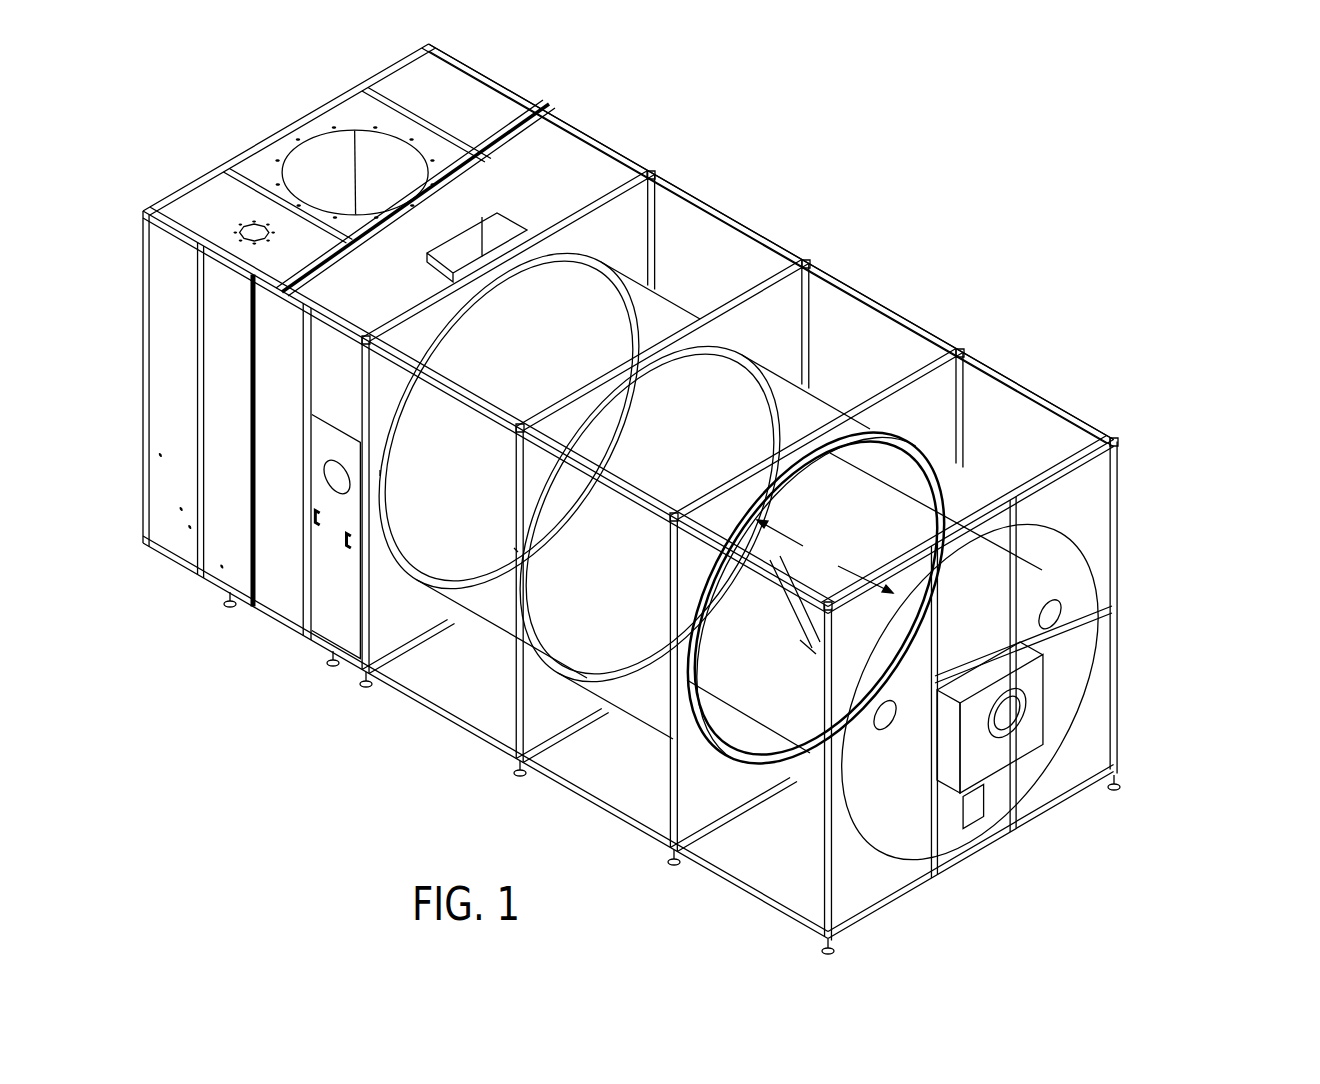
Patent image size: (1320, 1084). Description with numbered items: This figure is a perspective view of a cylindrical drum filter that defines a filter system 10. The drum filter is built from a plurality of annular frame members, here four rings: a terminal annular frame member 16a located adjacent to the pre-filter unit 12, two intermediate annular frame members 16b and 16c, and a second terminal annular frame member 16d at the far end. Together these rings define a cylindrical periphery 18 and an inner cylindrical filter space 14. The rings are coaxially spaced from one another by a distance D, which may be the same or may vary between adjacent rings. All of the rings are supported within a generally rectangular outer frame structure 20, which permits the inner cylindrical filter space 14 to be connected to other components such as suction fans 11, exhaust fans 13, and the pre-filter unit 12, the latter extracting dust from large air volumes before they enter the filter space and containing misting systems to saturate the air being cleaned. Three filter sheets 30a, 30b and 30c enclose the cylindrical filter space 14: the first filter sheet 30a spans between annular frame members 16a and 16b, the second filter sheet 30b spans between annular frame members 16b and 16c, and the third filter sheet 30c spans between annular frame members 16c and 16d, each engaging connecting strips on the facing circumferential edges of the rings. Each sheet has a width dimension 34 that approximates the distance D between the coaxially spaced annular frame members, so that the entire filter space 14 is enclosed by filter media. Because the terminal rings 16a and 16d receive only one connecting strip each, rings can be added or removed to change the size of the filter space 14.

The filter system 10 is at (748, 166).
The suction fans 11 is at (1066, 568).
The pre-filter unit 12 is at (537, 94).
The exhaust fans 13 is at (1040, 715).
The inner cylindrical filter space 14 is at (850, 520).
The terminal annular frame member 16a is at (562, 254).
The annular frame member 16b is at (667, 350).
The annular frame member 16c is at (868, 430).
The terminal annular frame member 16d is at (900, 590).
The cylindrical periphery 18 is at (817, 380).
The outer frame structure 20 is at (930, 327).
The first filter sheet 30a is at (569, 348).
The second filter sheet 30b is at (730, 440).
The third filter sheet 30c is at (944, 493).
The width dimension 34 is at (515, 550).
The distance D is at (825, 556).